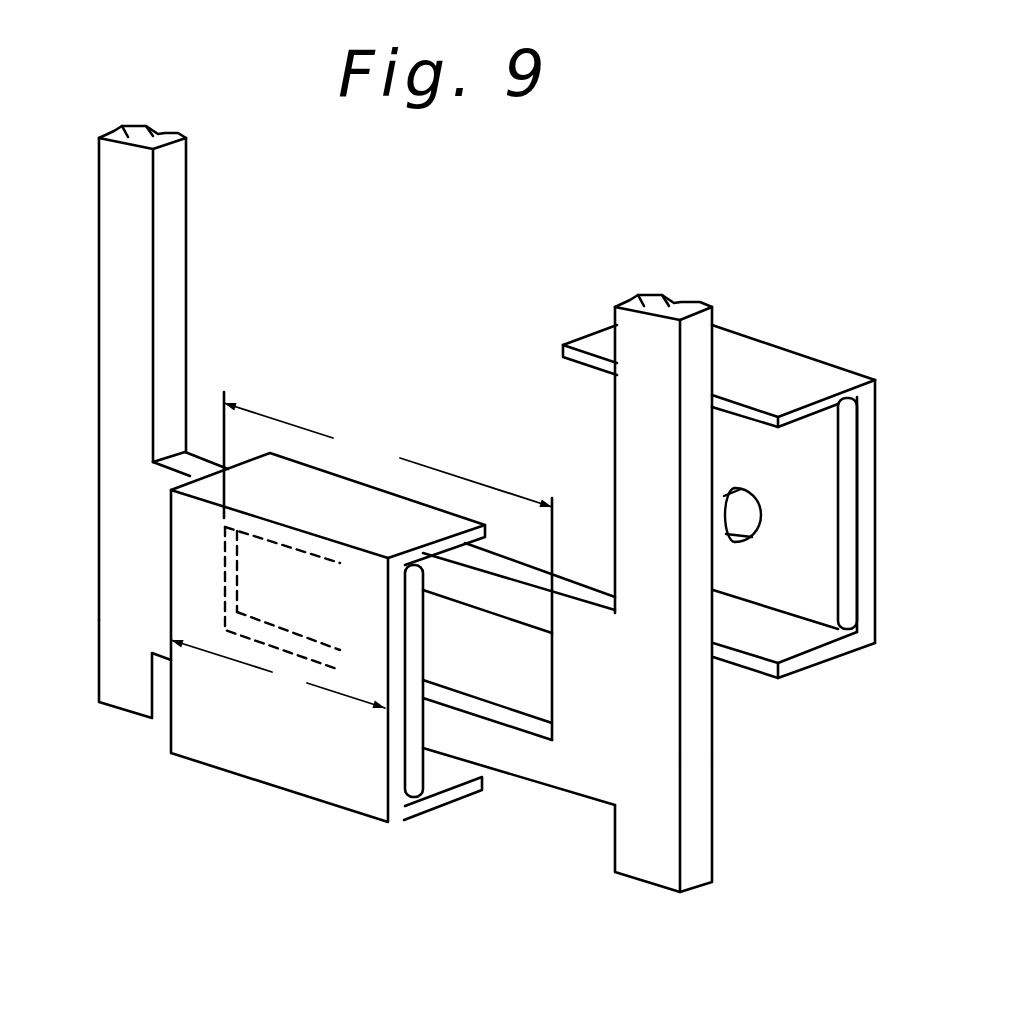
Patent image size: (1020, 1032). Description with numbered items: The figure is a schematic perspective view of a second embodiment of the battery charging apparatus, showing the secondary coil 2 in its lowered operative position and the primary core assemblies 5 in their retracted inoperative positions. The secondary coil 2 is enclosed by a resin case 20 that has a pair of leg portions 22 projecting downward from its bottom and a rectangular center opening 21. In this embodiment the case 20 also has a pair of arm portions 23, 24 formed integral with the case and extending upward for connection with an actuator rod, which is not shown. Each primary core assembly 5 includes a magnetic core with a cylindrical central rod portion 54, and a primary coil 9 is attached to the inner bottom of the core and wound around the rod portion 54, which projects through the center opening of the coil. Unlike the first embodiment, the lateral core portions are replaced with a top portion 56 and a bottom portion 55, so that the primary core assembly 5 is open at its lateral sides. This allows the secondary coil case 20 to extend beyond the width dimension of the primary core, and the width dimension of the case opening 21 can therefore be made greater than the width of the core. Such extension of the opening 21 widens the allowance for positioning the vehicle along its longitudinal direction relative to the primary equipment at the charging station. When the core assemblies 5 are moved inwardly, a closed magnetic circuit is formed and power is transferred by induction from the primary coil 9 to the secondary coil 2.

The secondary coil 2 is at (522, 786).
The primary core assembly 5 is at (544, 593).
The primary coil 9 is at (815, 545).
The resin case 20 is at (189, 373).
The rectangular center opening 21 is at (552, 685).
The leg portions 22 is at (118, 690).
The arm portion 23 is at (157, 282).
The arm portion 24 is at (630, 482).
The cylindrical central rod portion 54 is at (725, 530).
The bottom portion 55 is at (423, 802).
The top portion 56 is at (438, 547).